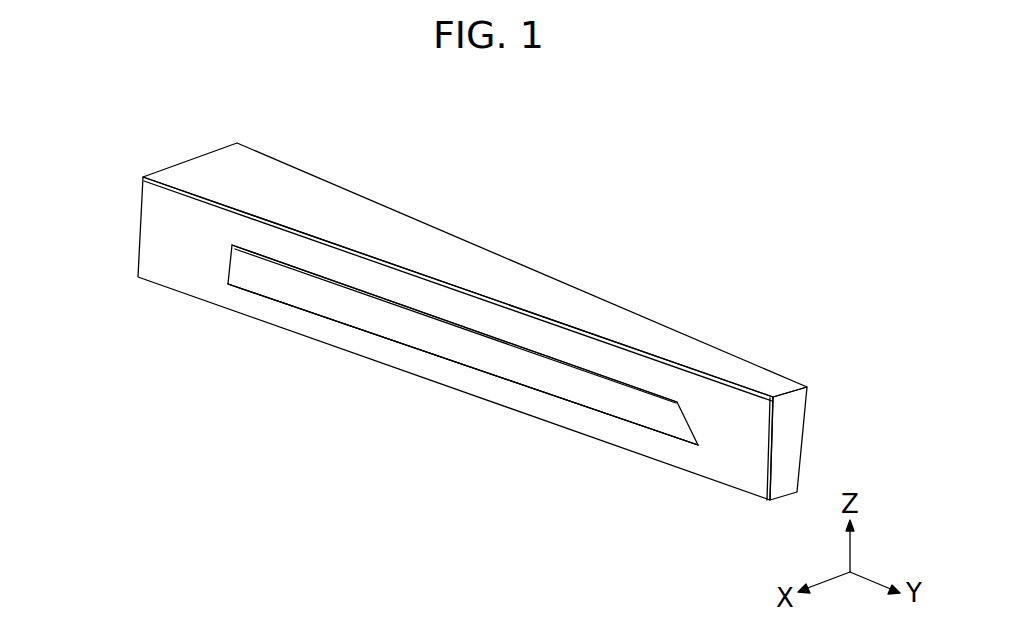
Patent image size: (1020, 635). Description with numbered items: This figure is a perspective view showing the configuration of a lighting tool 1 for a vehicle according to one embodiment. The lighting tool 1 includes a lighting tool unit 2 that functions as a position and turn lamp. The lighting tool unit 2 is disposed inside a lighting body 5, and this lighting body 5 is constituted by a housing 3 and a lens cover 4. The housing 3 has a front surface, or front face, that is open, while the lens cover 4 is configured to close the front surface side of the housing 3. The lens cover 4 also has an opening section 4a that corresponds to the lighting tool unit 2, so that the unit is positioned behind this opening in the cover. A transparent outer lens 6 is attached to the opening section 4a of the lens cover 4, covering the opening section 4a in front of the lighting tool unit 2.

The lighting tool 1 is at (181, 116).
The lighting tool unit 2 is at (447, 347).
The housing 3 is at (772, 382).
The lens cover 4 is at (737, 413).
The opening section 4a is at (265, 293).
The lighting body 5 is at (836, 253).
The outer lens 6 is at (593, 393).